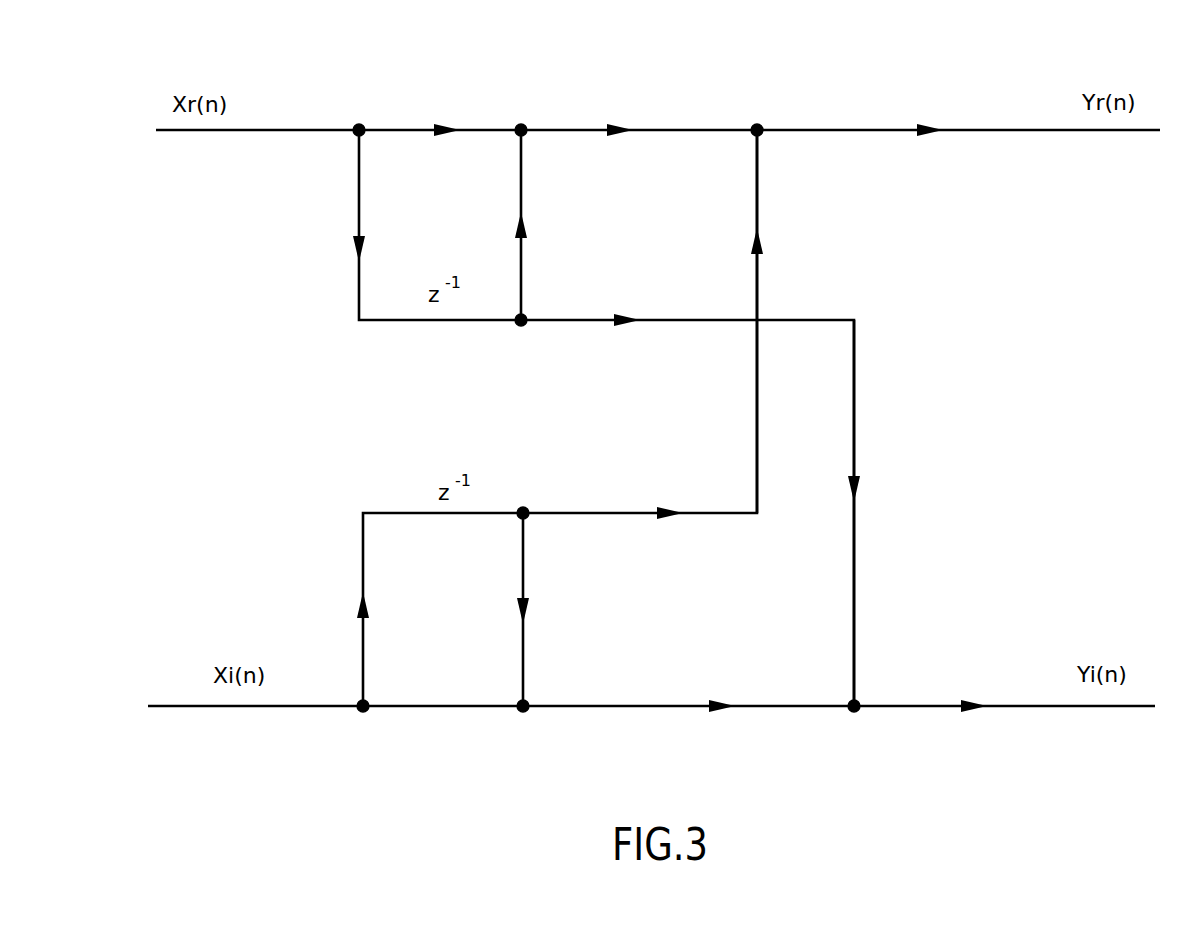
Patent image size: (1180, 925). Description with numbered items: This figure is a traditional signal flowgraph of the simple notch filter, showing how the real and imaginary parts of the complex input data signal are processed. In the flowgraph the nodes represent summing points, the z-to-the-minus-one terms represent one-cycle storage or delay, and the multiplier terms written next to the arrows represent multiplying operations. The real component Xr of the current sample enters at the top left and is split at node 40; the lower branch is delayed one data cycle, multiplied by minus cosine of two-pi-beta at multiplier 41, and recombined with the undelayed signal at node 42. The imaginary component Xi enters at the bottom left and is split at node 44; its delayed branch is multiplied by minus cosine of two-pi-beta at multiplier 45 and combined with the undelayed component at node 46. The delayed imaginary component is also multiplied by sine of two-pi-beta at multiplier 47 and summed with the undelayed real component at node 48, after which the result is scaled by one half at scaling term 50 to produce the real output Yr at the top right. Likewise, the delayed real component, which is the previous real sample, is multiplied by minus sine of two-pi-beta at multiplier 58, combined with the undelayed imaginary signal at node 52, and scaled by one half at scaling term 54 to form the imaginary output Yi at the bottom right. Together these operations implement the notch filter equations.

The node 40 is at (361, 122).
The node 42 is at (522, 122).
The node 48 is at (757, 122).
The node 44 is at (362, 712).
The node 46 is at (523, 712).
The node 52 is at (855, 712).
The multiplier term -cos(2·pi·beta) 41 is at (580, 200).
The multiplier term -cos(2·pi·beta) 45 is at (583, 579).
The multiplier term sin(2·pi·beta) 47 is at (810, 249).
The multiplier term -sin(2·pi·beta) 58 is at (915, 463).
The scaling by ½ 50 is at (931, 74).
The scaling by ½ 54 is at (975, 651).